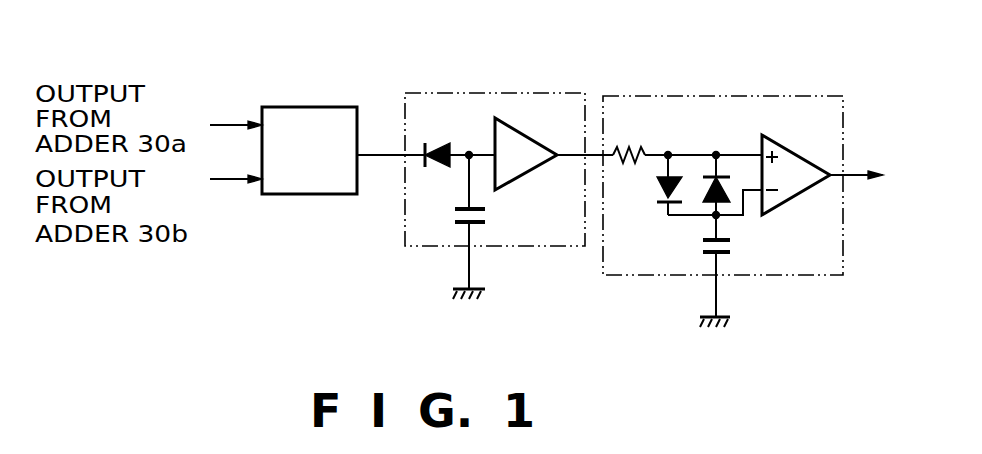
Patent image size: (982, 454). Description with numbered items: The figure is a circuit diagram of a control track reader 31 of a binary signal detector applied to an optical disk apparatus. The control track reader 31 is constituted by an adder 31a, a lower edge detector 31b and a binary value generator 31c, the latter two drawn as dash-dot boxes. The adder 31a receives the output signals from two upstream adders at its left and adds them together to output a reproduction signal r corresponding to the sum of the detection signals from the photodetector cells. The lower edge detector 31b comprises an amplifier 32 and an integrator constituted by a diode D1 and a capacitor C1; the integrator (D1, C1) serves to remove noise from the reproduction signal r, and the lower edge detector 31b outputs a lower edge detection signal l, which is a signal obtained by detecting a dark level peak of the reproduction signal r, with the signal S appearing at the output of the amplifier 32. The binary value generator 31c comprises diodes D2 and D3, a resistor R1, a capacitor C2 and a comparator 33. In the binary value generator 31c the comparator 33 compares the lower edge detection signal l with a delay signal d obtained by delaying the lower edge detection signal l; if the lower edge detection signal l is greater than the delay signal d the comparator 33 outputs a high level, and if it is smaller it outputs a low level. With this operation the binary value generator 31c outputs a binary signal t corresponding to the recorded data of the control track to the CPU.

The control track reader 31 is at (552, 62).
The adder 31a is at (333, 195).
The lower edge detector 31b is at (509, 203).
The binary value generator 31c is at (625, 247).
The amplifier 32 is at (531, 141).
The comparator 33 is at (808, 151).
The diode D1 is at (444, 141).
The diode D2 is at (658, 190).
The diode D3 is at (698, 192).
The capacitor C1 is at (487, 213).
The capacitor C2 is at (732, 248).
The resistor R1 is at (625, 148).
The reproduction signal r is at (378, 152).
The peak hold output signal S is at (595, 152).
The binary signal t is at (858, 172).
The delay signal d is at (745, 211).
The lower edge detection signal l is at (682, 153).